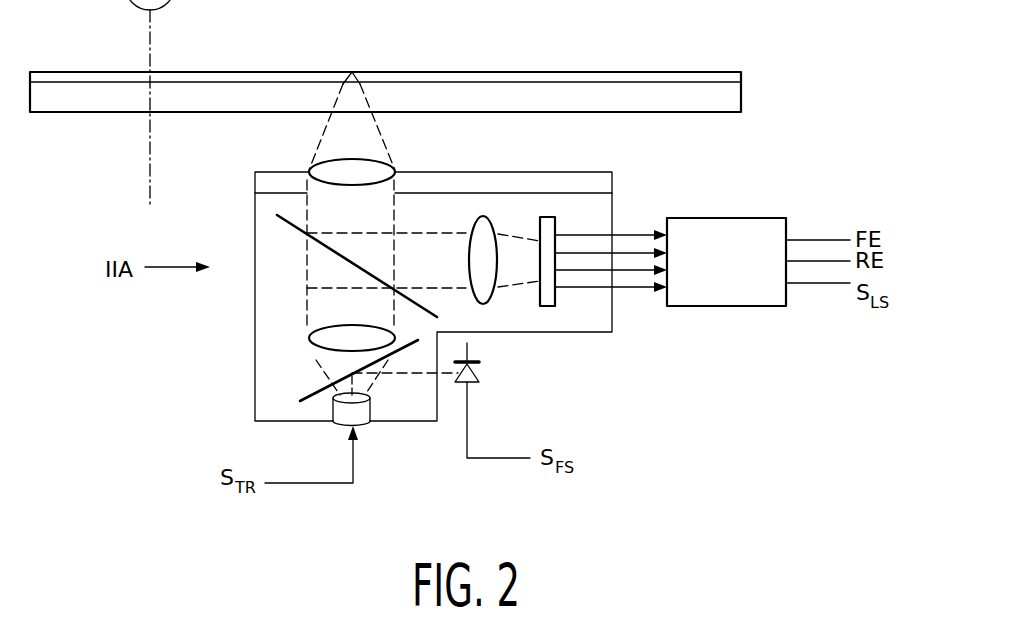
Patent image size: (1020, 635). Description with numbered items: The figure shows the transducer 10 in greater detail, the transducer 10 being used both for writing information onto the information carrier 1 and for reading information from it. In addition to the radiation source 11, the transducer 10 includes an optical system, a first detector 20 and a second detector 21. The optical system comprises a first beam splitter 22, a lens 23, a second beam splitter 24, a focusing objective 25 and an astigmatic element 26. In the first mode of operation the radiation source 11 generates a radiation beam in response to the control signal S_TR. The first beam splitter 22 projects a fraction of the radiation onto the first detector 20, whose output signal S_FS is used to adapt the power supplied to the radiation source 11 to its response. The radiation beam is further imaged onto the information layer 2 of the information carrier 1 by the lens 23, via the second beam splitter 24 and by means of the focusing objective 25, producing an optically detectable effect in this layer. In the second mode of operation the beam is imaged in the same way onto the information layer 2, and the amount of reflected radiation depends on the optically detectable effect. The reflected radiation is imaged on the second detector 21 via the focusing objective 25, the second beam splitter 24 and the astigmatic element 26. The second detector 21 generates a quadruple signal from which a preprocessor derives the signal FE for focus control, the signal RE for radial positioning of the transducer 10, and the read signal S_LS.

The information carrier 1 is at (331, 62).
The information layer 2 is at (227, 78).
The transducer 10 is at (190, 435).
The radiation source 11 is at (342, 415).
The first detector 20 is at (470, 380).
The second detector 21 is at (548, 308).
The first beam splitter 22 is at (304, 397).
The lens 23 is at (310, 337).
The second beam splitter 24 is at (283, 222).
The focusing objective 25 is at (306, 172).
The astigmatic element 26 is at (481, 213).